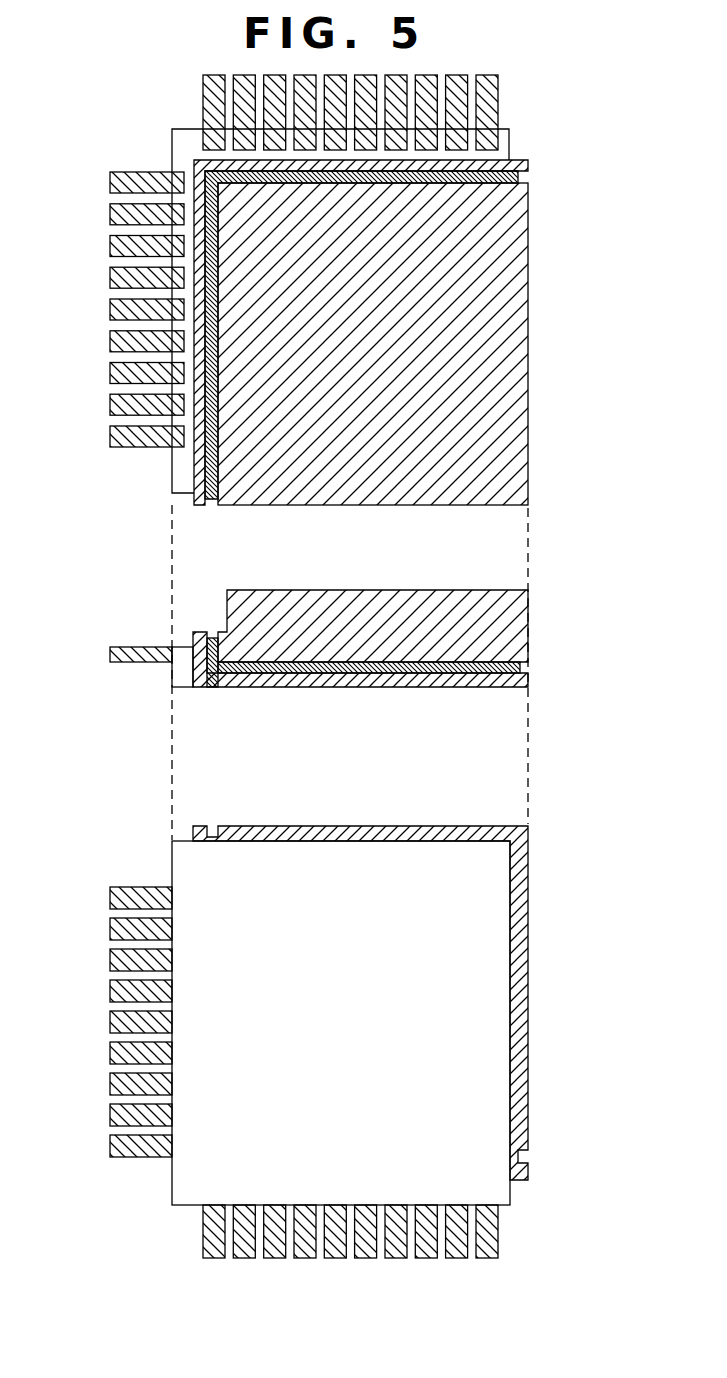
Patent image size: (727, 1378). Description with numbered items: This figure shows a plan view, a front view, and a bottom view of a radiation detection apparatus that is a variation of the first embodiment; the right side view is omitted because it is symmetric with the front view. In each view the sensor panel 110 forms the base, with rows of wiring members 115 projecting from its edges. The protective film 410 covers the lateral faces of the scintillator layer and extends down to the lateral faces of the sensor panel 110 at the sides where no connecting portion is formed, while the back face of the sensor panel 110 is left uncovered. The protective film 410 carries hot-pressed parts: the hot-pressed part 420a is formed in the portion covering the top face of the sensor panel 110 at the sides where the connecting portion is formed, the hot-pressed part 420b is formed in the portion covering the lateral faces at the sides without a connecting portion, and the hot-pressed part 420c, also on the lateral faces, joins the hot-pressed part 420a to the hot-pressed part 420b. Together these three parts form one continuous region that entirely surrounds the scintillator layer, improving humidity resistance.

The sensor panel 110 is at (186, 471).
The wiring members 115 is at (489, 77).
The protective film 410 is at (528, 322).
The hot-pressed part 420a is at (520, 177).
The hot-pressed part 420b is at (462, 675).
The hot-pressed part 420c is at (212, 688).